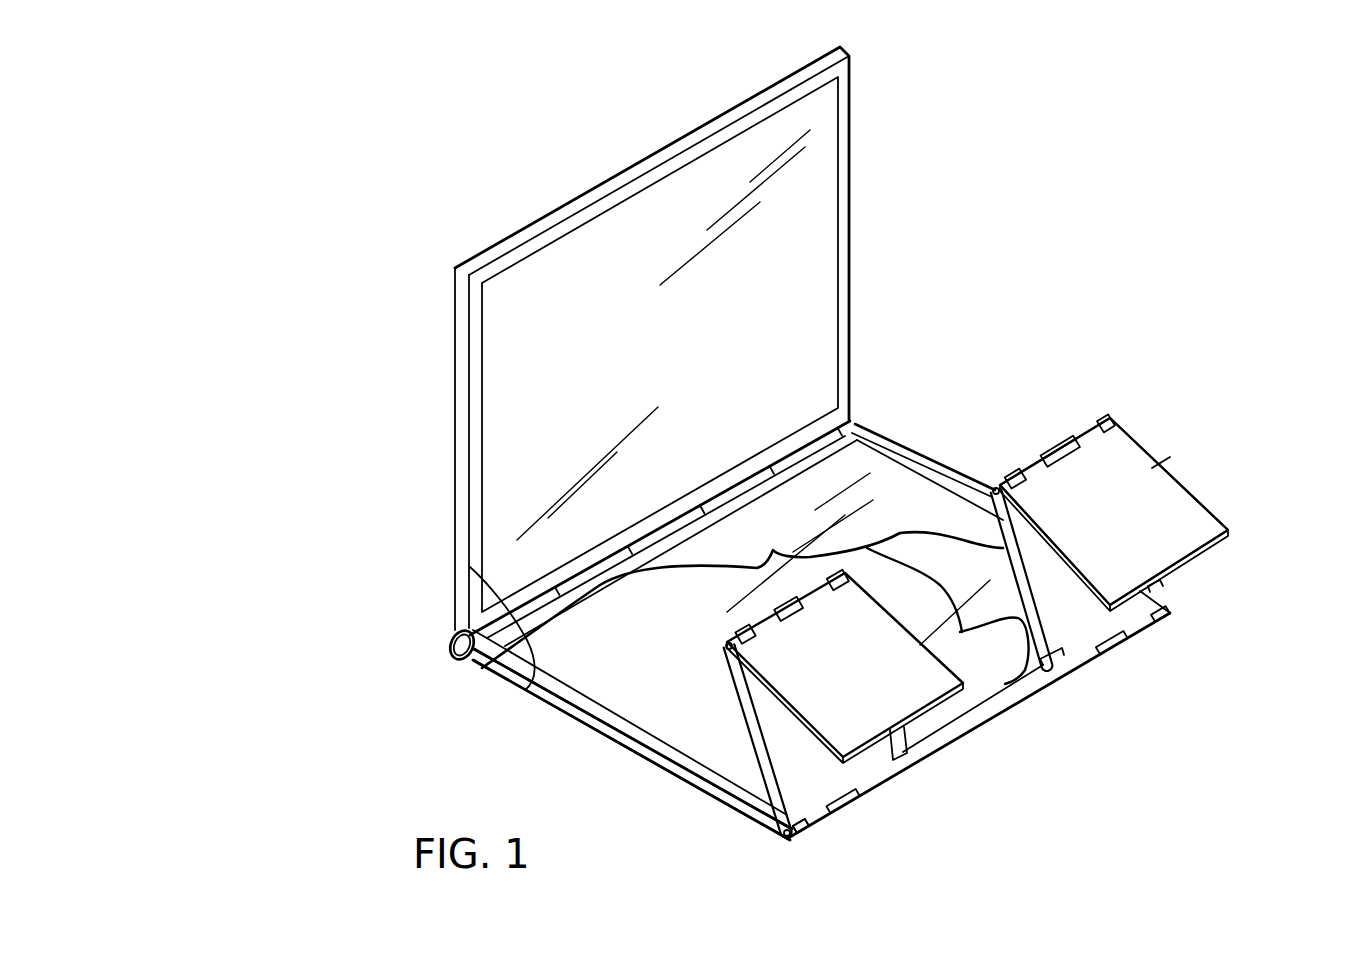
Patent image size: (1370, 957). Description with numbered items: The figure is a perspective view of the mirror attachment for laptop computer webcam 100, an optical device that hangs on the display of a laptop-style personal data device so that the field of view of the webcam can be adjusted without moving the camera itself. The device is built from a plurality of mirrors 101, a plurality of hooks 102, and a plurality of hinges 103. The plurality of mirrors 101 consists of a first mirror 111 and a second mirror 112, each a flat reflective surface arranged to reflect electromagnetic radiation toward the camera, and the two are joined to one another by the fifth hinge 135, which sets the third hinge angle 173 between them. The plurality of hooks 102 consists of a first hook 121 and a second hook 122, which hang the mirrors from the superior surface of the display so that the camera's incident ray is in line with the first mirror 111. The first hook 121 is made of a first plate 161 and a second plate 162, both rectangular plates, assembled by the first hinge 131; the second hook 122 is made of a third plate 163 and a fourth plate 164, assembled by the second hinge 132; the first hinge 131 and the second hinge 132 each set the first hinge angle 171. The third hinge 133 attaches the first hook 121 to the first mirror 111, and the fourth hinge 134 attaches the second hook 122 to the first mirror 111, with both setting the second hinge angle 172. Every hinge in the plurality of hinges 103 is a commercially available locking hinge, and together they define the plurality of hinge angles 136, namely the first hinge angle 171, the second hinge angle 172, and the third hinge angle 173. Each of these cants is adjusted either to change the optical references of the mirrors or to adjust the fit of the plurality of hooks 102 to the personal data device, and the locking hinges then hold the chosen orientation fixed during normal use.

The mirror attachment for laptop computer webcam 100 is at (391, 177).
The plurality of mirrors 101 is at (470, 567).
The plurality of hooks 102 is at (837, 813).
The plurality of hinges 103 is at (451, 642).
The first mirror 111 is at (925, 464).
The second mirror 112 is at (853, 247).
The first hook 121 is at (758, 790).
The second hook 122 is at (1183, 518).
The first hinge 131 is at (727, 644).
The second hinge 132 is at (1110, 418).
The third hinge 133 is at (797, 838).
The fourth hinge 134 is at (1170, 612).
The fifth hinge 135 is at (853, 417).
The plurality of hinge angles 136 is at (773, 550).
The first plate 161 is at (762, 795).
The second plate 162 is at (822, 630).
The third plate 163 is at (1167, 582).
The fourth plate 164 is at (1160, 478).
The first hinge angle 171 is at (1030, 541).
The second hinge angle 172 is at (928, 644).
The third hinge angle 173 is at (505, 603).